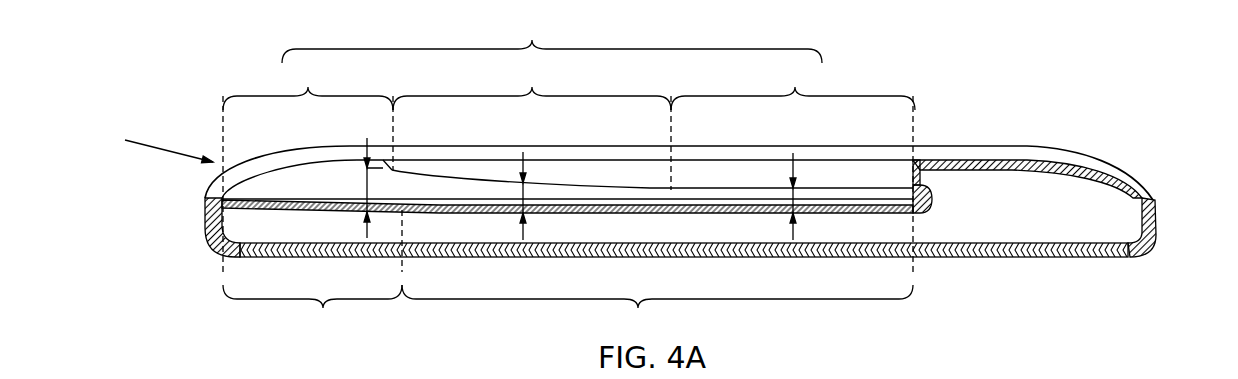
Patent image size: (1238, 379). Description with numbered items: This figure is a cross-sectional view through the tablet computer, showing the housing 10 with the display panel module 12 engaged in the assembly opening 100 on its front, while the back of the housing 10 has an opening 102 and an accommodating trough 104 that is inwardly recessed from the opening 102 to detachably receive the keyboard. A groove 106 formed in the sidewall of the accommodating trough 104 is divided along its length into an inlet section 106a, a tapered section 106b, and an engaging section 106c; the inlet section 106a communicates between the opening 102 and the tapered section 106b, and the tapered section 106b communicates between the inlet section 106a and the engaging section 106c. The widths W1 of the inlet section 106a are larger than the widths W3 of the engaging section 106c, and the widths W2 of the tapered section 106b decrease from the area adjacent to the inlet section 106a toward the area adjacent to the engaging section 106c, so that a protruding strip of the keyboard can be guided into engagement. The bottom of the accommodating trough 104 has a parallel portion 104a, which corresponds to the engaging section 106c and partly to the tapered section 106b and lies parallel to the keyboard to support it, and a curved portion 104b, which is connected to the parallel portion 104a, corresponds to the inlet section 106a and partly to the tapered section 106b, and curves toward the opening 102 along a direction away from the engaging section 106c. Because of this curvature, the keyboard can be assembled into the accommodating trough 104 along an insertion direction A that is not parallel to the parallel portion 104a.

The housing 10 is at (1113, 163).
The display panel module 12 is at (1000, 258).
The assembly opening 100 is at (705, 277).
The opening 102 is at (893, 159).
The accommodating trough 104 is at (945, 178).
The parallel portion 104a is at (657, 310).
The curved portion 104b is at (312, 273).
The groove 106 is at (552, 40).
The inlet section 106a is at (308, 167).
The tapered section 106b is at (532, 126).
The engaging section 106c is at (793, 167).
The widths of the inlet section W1 is at (366, 185).
The widths of the tapered section W2 is at (522, 192).
The widths of the engaging section W3 is at (793, 196).
The insertion direction A is at (157, 147).